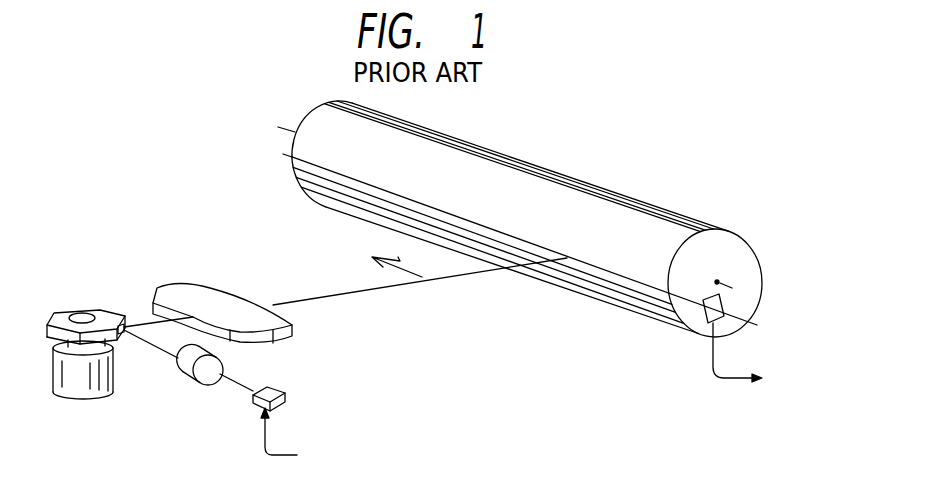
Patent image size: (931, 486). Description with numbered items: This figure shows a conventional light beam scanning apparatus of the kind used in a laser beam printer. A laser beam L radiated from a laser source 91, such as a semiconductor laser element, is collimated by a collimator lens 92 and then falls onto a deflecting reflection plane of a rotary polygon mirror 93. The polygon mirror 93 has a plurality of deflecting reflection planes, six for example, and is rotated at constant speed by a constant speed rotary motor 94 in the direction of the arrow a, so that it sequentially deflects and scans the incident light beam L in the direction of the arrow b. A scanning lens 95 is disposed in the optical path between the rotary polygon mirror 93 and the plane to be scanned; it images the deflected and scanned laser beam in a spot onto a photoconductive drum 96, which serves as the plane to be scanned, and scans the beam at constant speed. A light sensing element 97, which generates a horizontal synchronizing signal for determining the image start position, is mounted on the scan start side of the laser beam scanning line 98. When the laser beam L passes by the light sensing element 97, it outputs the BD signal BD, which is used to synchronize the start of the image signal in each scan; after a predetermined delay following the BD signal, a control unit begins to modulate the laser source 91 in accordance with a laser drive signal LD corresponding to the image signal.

The laser source 91 is at (285, 392).
The collimator lens 92 is at (184, 385).
The rotary polygon mirror 93 is at (98, 310).
The constant speed rotary motor 94 is at (75, 393).
The scanning lens 95 is at (203, 285).
The photoconductive drum 96 is at (655, 213).
The light sensing element 97 is at (727, 303).
The laser beam scanning line 98 is at (630, 282).
The direction of rotation of the polygon mirror a is at (73, 313).
The scanning direction of the light beam b is at (420, 270).
The laser beam L is at (243, 377).
The laser drive signal LD is at (295, 439).
The BD signal BD is at (754, 358).